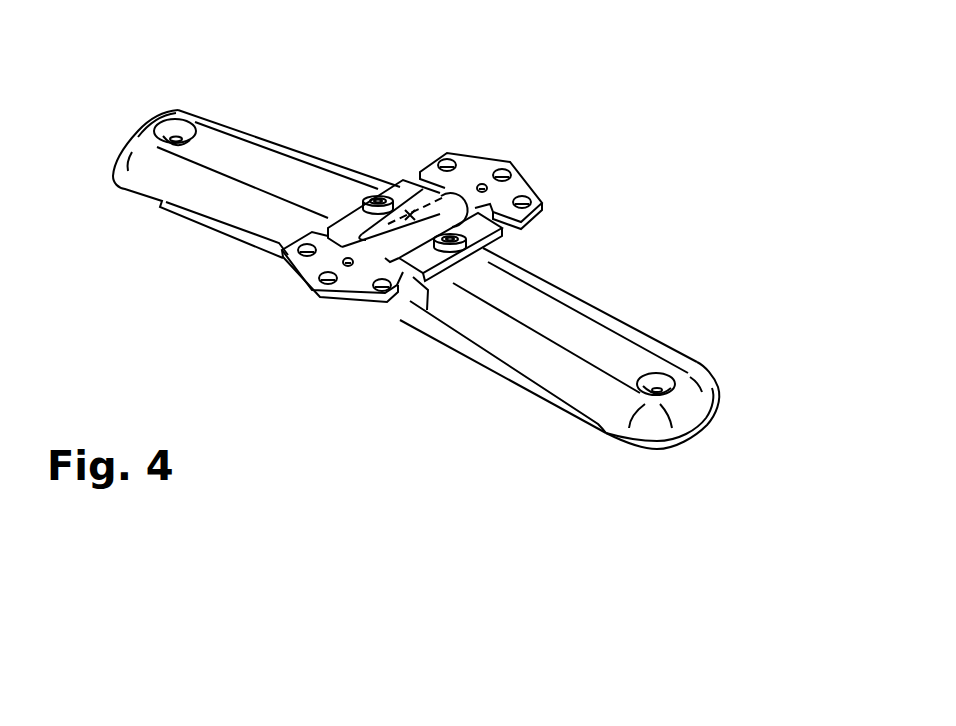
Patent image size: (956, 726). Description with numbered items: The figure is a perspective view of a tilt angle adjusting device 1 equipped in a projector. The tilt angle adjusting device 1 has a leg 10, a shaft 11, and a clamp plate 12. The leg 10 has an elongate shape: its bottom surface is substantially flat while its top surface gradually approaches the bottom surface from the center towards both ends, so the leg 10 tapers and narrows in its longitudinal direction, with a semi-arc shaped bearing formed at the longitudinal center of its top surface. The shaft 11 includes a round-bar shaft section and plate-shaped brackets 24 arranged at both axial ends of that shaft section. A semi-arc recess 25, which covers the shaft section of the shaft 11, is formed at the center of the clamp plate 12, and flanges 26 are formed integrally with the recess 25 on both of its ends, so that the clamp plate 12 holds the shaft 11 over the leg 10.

The tilt angle adjusting device 1 is at (664, 243).
The leg 10 is at (723, 396).
The shaft 11 is at (404, 197).
The clamp plate 12 is at (374, 177).
The brackets 24 is at (512, 160).
The recess 25 is at (390, 266).
The flanges 26 is at (380, 193).